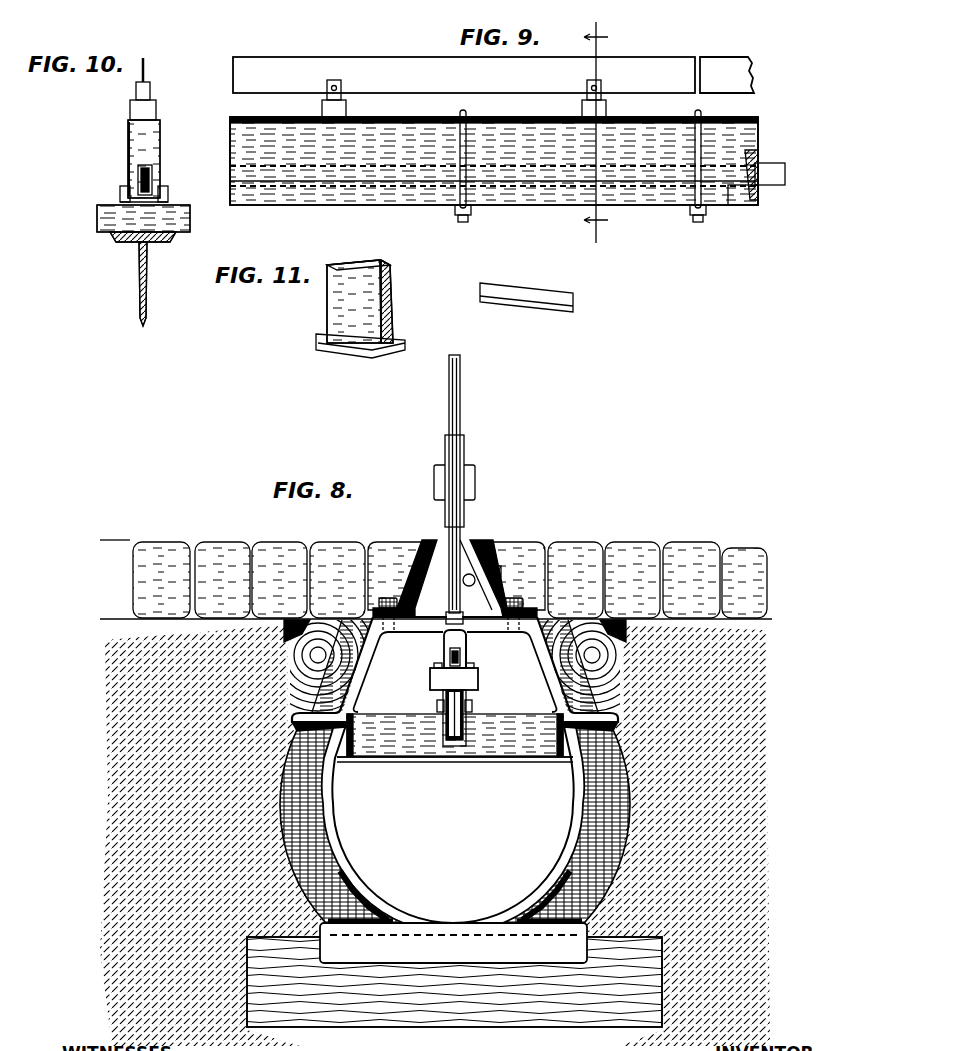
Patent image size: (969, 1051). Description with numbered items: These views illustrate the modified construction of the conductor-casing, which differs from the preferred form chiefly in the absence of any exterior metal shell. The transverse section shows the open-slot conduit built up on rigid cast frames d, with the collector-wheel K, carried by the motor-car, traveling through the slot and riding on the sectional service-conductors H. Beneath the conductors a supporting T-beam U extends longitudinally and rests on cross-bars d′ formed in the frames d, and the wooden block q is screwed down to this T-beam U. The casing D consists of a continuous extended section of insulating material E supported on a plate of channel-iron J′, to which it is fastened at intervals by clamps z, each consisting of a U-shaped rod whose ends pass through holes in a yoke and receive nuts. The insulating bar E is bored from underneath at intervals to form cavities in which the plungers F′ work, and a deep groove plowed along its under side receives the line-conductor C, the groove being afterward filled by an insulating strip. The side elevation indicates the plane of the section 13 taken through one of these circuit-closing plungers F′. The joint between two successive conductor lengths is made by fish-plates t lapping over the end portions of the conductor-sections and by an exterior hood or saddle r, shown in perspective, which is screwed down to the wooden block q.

In FIG. 10, the sectional service-conductor H is at (148, 62).
In FIG. 9, the sectional service-conductor H is at (493, 75).
In FIG. 8, the sectional service-conductor H is at (463, 616).
In FIG. 10, the plunger F′ is at (156, 92).
In FIG. 9, the plunger F′ is at (320, 100).
In FIG. 10, the insulating material section E is at (126, 150).
In FIG. 9, the insulating material section E is at (760, 132).
In FIG. 10, the conductor-casing D is at (144, 159).
In FIG. 9, the conductor-casing D is at (228, 152).
In FIG. 8, the conductor-casing D is at (443, 654).
In FIG. 10, the channel-iron plate J′ is at (118, 194).
In FIG. 9, the channel-iron plate J′ is at (735, 195).
In FIG. 10, the supporting T-beam U is at (137, 280).
In FIG. 8, the supporting T-beam U is at (437, 706).
In FIG. 9, the clamp z is at (576, 176).
In FIG. 9, the line-conductor C is at (786, 177).
In FIG. 8, the line-conductor C is at (468, 648).
In FIG. 9, the section line 13 is at (596, 132).
In FIG. 11, the hood or saddle r is at (395, 300).
In FIG. 11, the fish-plate t is at (526, 289).
In FIG. 8, the collector-wheel K is at (462, 412).
In FIG. 8, the wooden block q is at (478, 681).
In FIG. 8, the cross-bar d′ is at (450, 756).
In FIG. 8, the cast frame d is at (345, 862).